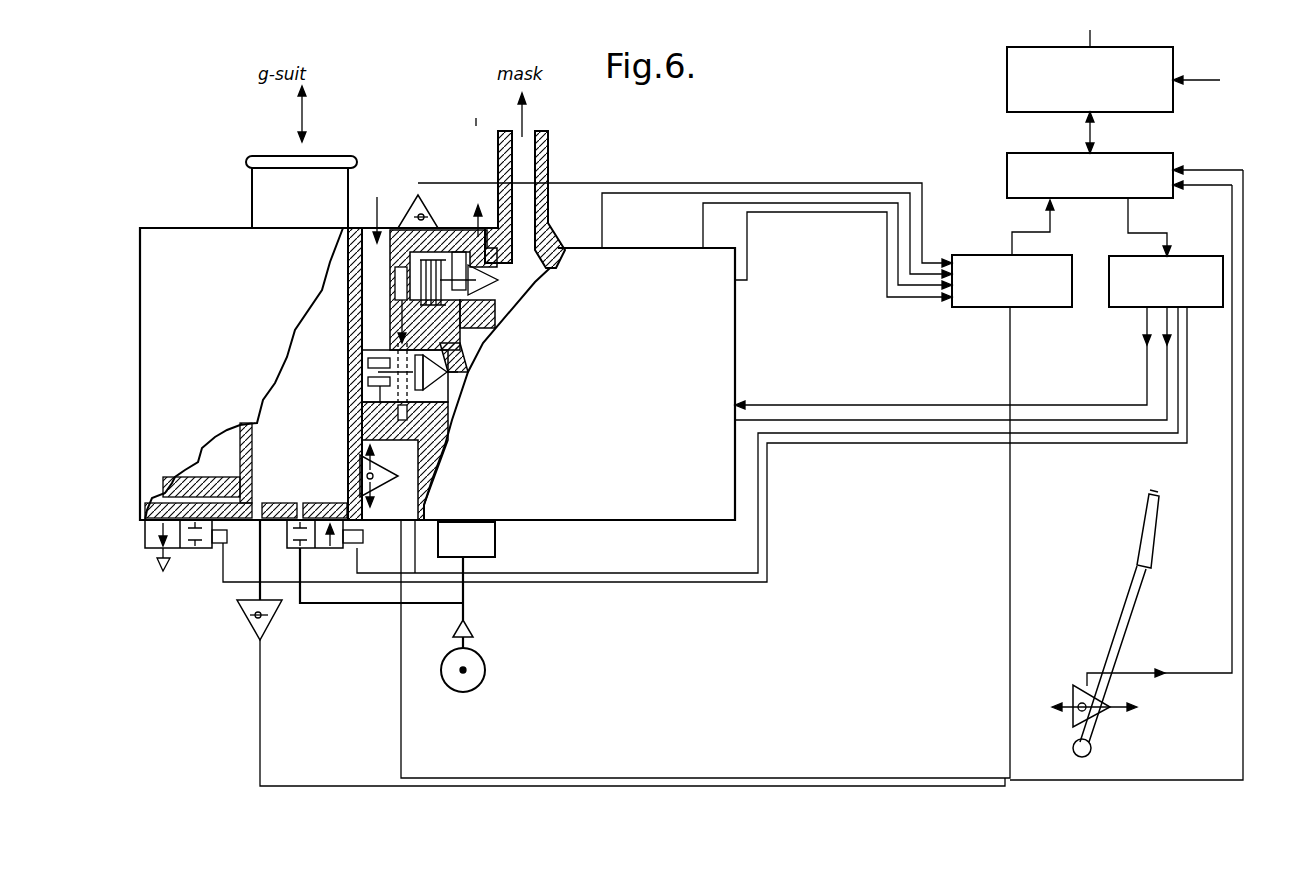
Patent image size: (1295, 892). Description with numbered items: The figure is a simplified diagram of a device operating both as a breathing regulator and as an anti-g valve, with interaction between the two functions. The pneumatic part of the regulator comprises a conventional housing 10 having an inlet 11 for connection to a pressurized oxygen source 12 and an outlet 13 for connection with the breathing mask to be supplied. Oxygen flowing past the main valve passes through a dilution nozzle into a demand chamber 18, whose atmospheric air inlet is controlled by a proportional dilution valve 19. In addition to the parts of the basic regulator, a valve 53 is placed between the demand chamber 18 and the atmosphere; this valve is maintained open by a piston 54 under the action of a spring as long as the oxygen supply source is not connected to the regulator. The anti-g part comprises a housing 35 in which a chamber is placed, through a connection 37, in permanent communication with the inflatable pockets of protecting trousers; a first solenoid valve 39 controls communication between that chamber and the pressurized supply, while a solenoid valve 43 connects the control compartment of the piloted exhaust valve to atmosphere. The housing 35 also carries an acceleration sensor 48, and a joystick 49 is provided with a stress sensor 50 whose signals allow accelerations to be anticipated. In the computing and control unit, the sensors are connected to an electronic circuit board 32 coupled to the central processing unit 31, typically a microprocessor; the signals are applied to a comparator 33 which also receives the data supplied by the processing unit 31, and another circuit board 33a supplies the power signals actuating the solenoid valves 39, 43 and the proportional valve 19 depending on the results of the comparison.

The housing 10 is at (556, 262).
The inlet 11 is at (475, 537).
The pressurized oxygen source 12 is at (486, 672).
The outlet 13 is at (500, 152).
The demand chamber 18 is at (532, 289).
The dilution valve 19 is at (362, 378).
The central processing unit 31 is at (1018, 81).
The electronic circuit board 32 is at (995, 300).
The comparator 33 is at (1022, 177).
The circuit board 33a is at (1137, 299).
The housing 35 is at (166, 240).
The connection 37 is at (265, 188).
The first solenoid valve 39 is at (310, 548).
The solenoid valve 43 is at (173, 546).
The acceleration sensor 48 is at (360, 464).
The joystick 49 is at (1123, 610).
The stress sensor 50 is at (1080, 690).
The valve 53 is at (475, 303).
The piston 54 is at (403, 247).